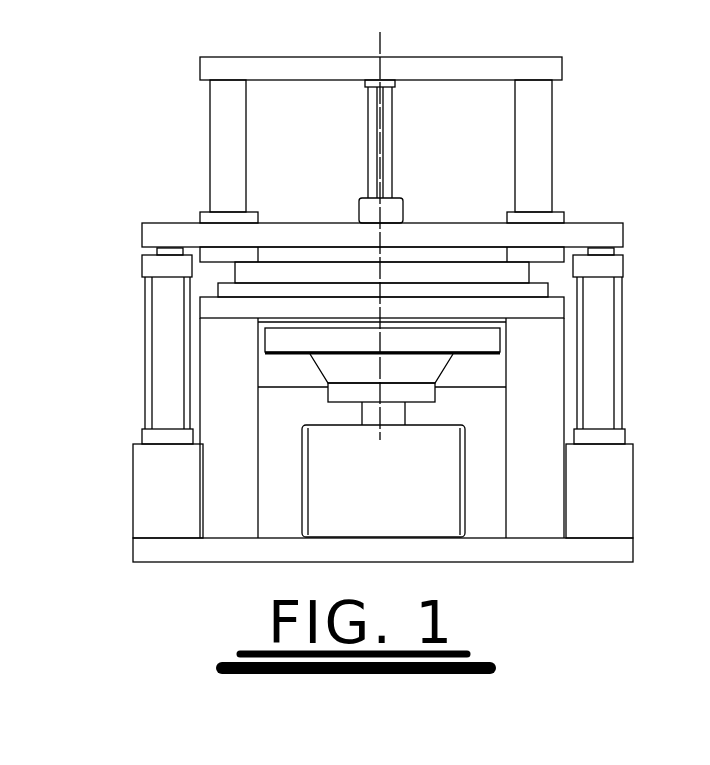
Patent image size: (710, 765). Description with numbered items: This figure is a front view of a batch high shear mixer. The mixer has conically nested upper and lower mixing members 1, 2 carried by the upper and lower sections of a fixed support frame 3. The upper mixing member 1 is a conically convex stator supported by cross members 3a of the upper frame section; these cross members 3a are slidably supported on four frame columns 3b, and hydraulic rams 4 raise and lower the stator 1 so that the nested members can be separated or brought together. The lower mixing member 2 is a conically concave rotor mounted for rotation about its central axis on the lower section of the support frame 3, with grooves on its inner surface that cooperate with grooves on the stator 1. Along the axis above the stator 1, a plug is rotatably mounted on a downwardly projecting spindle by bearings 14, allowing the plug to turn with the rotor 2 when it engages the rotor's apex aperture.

The upper mixing member 1 is at (436, 258).
The lower mixing member 2 is at (335, 367).
The fixed support frame 3 is at (220, 493).
The cross members 3a is at (263, 233).
The frame columns 3b is at (228, 110).
The hydraulic rams 4 is at (165, 360).
The bearings 14 is at (383, 164).